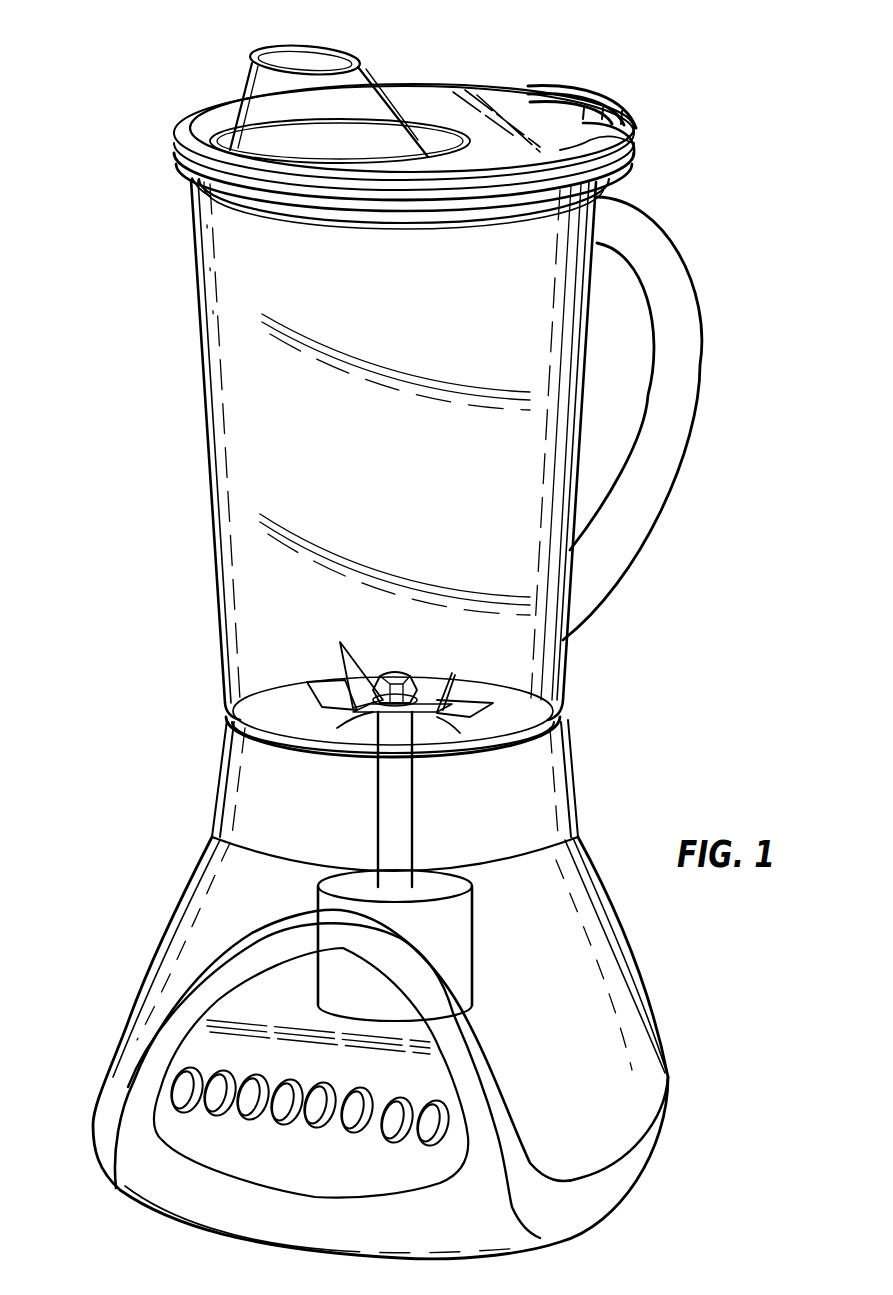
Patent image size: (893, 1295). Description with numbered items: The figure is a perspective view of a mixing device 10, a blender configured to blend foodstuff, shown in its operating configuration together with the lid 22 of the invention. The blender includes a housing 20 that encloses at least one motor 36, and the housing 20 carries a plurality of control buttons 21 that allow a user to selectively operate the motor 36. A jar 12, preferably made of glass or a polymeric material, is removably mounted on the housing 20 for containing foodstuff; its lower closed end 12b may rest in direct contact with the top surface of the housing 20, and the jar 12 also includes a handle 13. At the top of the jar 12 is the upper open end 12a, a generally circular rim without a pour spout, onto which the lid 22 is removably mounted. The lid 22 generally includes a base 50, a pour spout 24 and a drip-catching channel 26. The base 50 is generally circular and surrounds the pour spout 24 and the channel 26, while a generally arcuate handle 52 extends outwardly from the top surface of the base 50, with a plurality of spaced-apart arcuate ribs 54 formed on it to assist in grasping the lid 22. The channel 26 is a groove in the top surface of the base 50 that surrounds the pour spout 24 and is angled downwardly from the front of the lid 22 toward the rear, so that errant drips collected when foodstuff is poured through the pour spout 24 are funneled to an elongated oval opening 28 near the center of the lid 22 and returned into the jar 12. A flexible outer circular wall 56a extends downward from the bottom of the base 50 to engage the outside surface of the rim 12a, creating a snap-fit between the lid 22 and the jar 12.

The mixing device 10 is at (641, 40).
The jar 12 is at (197, 323).
The upper open end 12a is at (227, 232).
The lower closed end 12b is at (560, 690).
The handle 13 is at (697, 288).
The housing 20 is at (153, 957).
The control buttons 21 is at (283, 1130).
The lid 22 is at (476, 58).
The pour spout 24 is at (267, 100).
The drip-catching channel 26 is at (453, 222).
The opening 28 is at (417, 230).
The motor 36 is at (473, 937).
The base 50 is at (538, 113).
The handle 52 is at (590, 127).
The rib 54 is at (593, 90).
The outer circular wall 56a is at (223, 192).